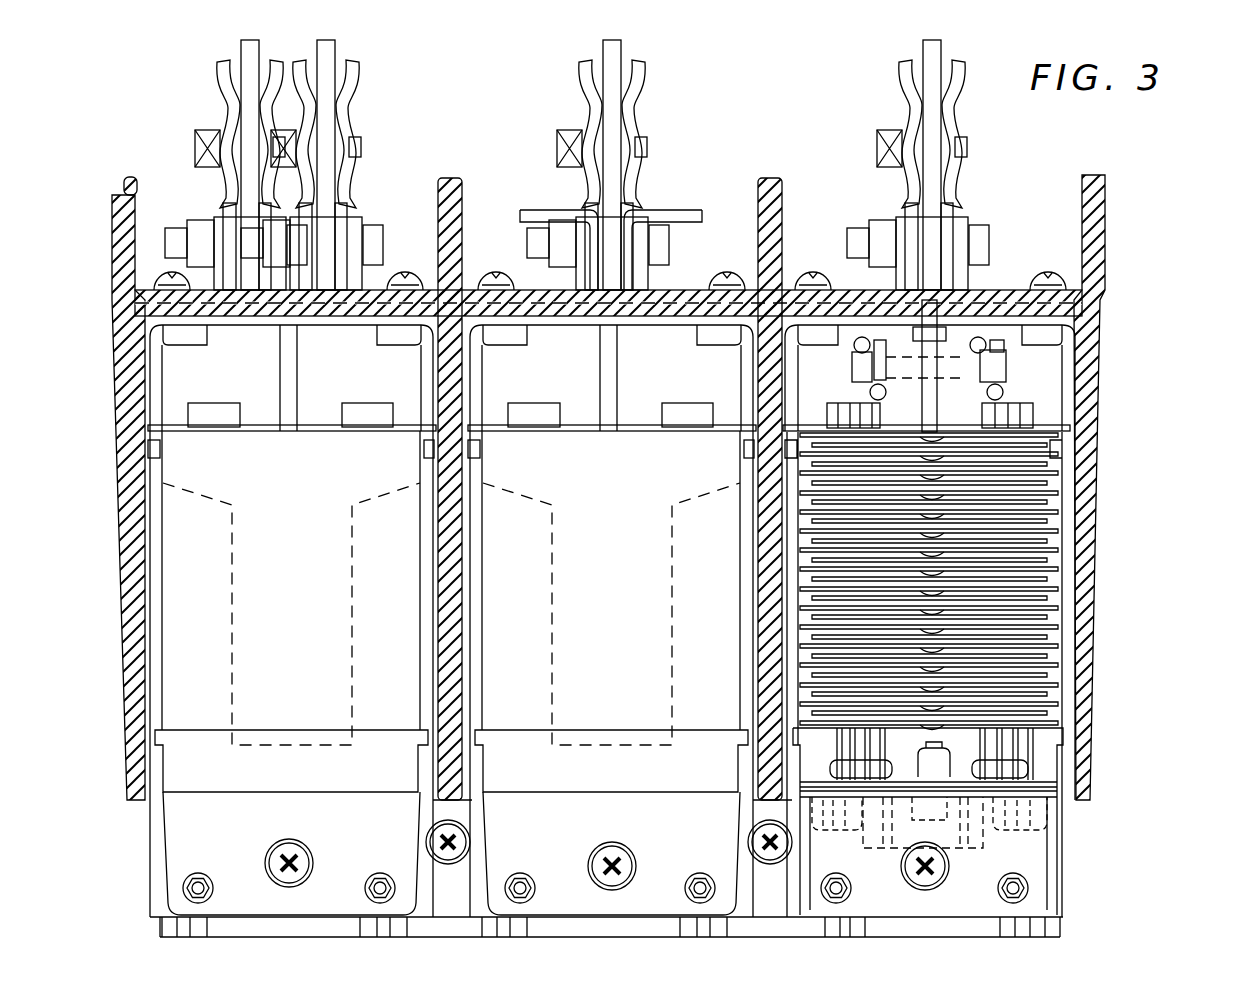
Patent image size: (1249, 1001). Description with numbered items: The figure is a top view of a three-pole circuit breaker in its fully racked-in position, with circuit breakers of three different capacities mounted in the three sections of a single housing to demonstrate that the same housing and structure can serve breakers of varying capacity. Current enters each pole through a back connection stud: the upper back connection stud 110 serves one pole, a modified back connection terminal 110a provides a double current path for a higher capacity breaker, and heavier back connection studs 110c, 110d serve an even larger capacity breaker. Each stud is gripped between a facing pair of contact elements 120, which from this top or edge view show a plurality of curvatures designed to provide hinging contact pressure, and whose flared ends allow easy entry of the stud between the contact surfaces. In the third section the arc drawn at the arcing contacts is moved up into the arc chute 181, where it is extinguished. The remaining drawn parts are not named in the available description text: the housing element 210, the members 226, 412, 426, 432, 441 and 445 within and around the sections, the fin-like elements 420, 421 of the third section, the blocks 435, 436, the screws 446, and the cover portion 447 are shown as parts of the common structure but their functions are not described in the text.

The upper back connection stud 110 is at (922, 44).
The back connection terminal 110a is at (624, 47).
The back connection stud 110c is at (340, 48).
The back connection stud 110d is at (242, 50).
The contact element 120 is at (222, 107).
The arc chute 181 is at (305, 617).
The housing 210 is at (1108, 320).
The heat sink side rail 226 is at (1062, 592).
The terminal block 412 is at (968, 425).
The heat sink fin 420 is at (1060, 558).
The heat sink fin 421 is at (1060, 535).
The terminal block 426 is at (822, 420).
The mounting shelf 432 is at (1062, 418).
The connector block 435 is at (990, 846).
The connector block 436 is at (880, 846).
The circuit component 441 is at (796, 378).
The partition wall 445 is at (1088, 370).
The mounting screw 446 is at (310, 820).
The cover 447 is at (160, 877).